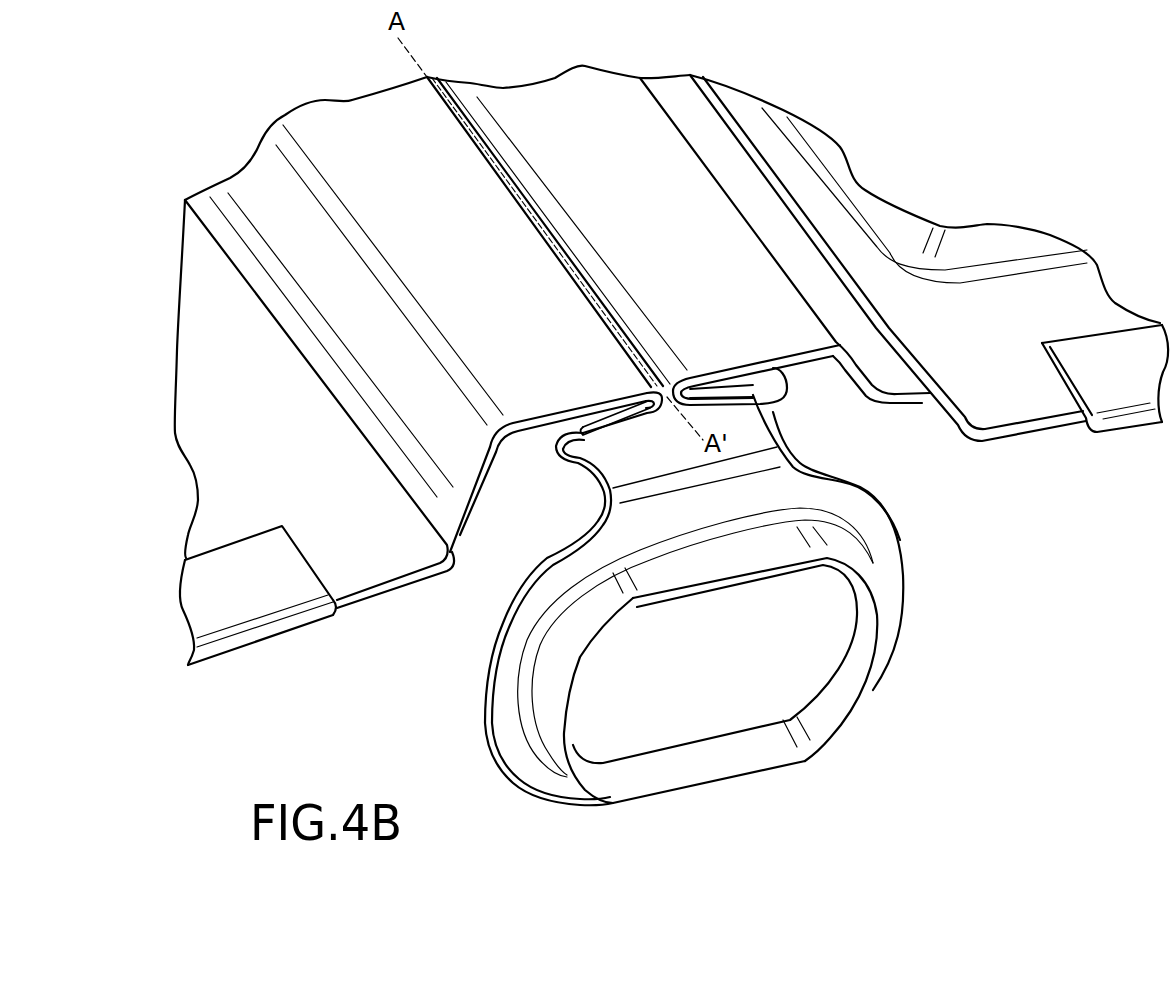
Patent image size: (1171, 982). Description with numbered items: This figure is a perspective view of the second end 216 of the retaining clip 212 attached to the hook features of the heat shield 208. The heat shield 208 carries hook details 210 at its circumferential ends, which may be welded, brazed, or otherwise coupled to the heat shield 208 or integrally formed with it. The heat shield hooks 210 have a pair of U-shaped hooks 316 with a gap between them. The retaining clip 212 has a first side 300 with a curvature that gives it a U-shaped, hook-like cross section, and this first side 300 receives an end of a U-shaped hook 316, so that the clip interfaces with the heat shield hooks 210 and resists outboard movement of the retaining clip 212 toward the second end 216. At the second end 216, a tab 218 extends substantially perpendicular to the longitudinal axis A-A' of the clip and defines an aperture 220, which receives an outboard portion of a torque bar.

The heat shield 208 is at (362, 570).
The hook details 210 is at (520, 100).
The retaining clip 212 is at (864, 756).
The second end 216 is at (783, 393).
The tab 218 is at (887, 543).
The aperture 220 is at (808, 645).
The first side 300 is at (538, 427).
The U-shaped hooks 316 is at (636, 455).